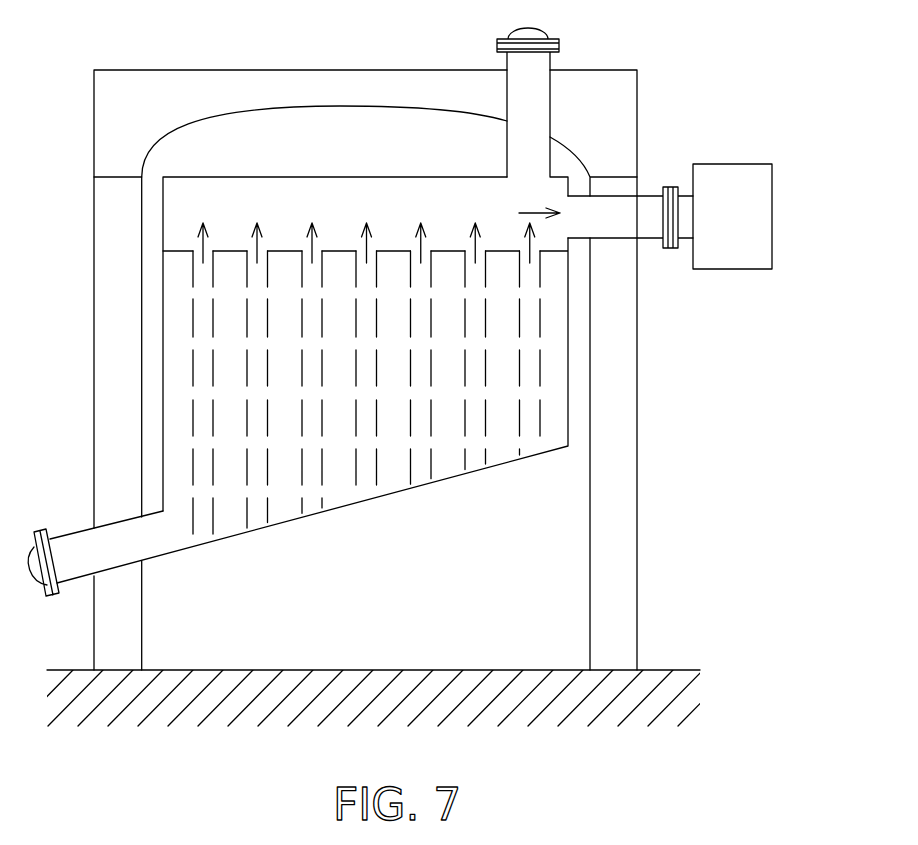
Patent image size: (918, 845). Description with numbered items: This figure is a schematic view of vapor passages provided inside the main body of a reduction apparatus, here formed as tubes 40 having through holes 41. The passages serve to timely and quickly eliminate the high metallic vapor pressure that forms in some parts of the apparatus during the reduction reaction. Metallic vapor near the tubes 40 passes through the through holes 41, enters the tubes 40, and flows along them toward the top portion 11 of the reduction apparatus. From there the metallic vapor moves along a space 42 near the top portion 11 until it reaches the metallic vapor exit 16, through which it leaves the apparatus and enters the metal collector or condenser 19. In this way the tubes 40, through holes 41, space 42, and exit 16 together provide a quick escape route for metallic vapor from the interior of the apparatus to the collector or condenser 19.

The top portion 11 is at (335, 177).
The metallic vapor exit 16 is at (613, 240).
The metal collector/condenser 19 is at (753, 223).
The tubes 40 is at (252, 522).
The through holes 41 is at (213, 493).
The space 42 is at (180, 211).